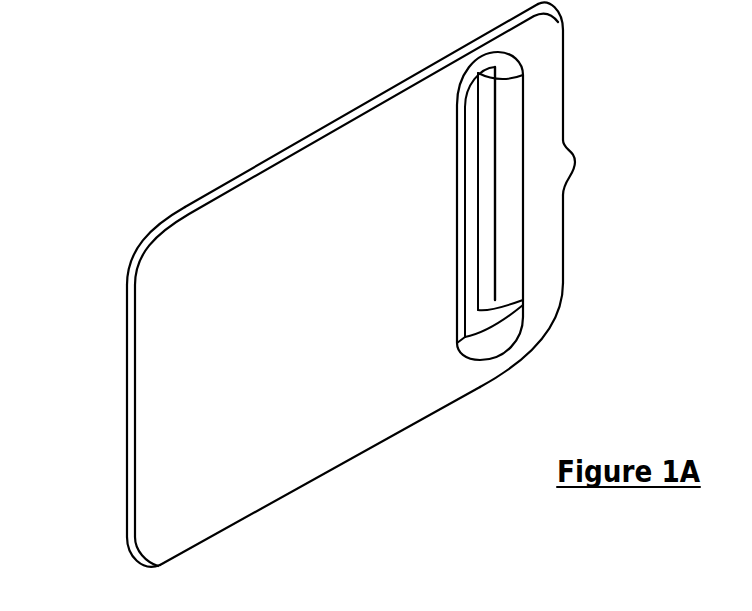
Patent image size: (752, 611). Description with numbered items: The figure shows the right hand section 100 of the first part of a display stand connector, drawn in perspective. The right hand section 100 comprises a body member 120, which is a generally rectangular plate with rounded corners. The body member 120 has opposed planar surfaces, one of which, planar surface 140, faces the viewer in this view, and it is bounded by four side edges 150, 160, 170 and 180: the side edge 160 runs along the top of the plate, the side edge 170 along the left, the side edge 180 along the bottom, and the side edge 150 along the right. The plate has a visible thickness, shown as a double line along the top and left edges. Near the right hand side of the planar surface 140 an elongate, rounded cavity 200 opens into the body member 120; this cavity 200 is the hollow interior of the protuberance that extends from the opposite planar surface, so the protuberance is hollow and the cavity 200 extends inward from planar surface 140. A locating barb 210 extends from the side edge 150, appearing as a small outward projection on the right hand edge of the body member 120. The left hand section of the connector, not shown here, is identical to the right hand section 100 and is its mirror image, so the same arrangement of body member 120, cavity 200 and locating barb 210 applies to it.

The right hand section 100 is at (176, 129).
The body member 120 is at (315, 352).
The planar surface 140 is at (305, 232).
The side edge 150 is at (563, 105).
The side edge 160 is at (375, 96).
The side edge 170 is at (127, 362).
The side edge 180 is at (332, 470).
The cavity 200 is at (495, 233).
The locating barb 210 is at (563, 163).